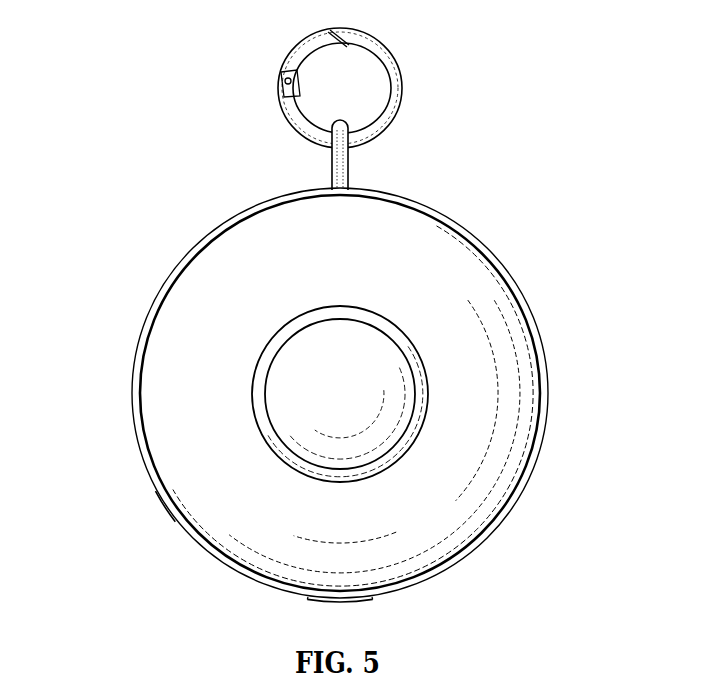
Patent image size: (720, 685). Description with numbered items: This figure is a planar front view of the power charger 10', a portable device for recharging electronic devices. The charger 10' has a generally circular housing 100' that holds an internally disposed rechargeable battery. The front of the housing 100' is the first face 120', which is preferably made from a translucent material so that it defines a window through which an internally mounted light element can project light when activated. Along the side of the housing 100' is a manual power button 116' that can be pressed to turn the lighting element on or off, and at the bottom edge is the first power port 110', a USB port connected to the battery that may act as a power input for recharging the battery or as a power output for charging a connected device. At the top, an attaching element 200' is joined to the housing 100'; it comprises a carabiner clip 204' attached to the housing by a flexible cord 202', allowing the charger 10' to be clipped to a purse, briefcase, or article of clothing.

The charger 10' is at (353, 324).
The housing 100' is at (367, 416).
The first power port 110' is at (298, 621).
The manual power button 116' is at (118, 510).
The first face 120' is at (251, 367).
The attaching element 200' is at (298, 97).
The flexible cord 202' is at (380, 155).
The carabiner clip 204' is at (355, 76).